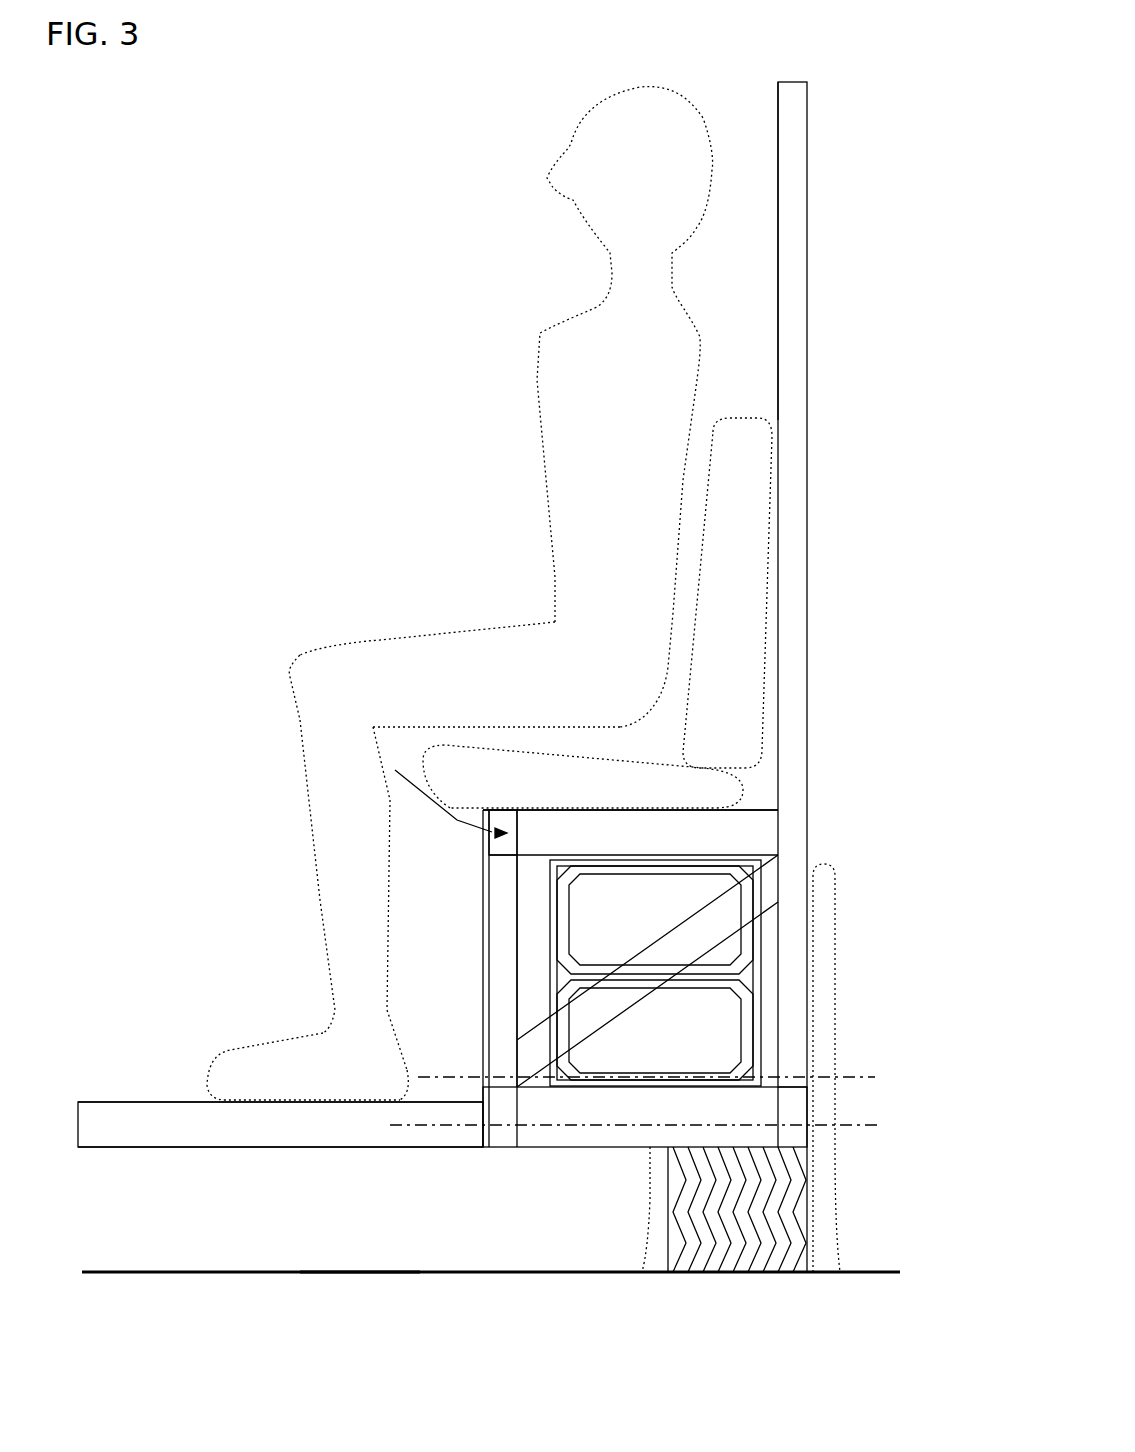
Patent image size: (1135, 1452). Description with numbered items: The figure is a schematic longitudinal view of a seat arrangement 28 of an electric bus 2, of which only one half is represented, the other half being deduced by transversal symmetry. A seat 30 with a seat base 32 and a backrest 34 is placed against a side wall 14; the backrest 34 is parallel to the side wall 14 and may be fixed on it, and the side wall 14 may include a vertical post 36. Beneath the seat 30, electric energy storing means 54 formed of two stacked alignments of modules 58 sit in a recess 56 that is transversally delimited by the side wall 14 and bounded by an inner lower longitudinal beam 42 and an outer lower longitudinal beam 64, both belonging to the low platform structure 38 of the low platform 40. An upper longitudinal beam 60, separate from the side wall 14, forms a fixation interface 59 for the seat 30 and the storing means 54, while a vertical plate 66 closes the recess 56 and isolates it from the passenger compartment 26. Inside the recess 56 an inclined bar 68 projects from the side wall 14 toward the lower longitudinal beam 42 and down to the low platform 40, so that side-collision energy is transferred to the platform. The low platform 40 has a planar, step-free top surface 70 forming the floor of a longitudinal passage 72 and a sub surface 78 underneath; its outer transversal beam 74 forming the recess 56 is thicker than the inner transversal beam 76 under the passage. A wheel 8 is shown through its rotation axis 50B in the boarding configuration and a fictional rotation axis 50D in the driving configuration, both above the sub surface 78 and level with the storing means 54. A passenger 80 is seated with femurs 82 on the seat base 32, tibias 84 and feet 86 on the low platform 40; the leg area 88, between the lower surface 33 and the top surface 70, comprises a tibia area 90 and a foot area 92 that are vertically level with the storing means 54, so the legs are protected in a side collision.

The electric bus 2 is at (75, 196).
The wheel 8 is at (740, 1300).
The side wall 14 is at (810, 277).
The passenger compartment 26 is at (221, 196).
The seat arrangement 28 is at (326, 196).
The seat 30 is at (428, 520).
The seat base 32 is at (518, 795).
The lower surface 33 is at (578, 815).
The backrest 34 is at (745, 625).
The vertical post 36 is at (790, 138).
The low platform structure 38 is at (223, 1220).
The low platform 40 is at (358, 1212).
The lower longitudinal beam 42 is at (505, 1140).
The rotation axis 50B is at (462, 1077).
The fictional rotation axis 50D is at (420, 1130).
The electric energy storing means 54 is at (767, 1000).
The recess 56 is at (770, 942).
The module 58 is at (626, 925).
The fixation interface 59 is at (385, 766).
The upper longitudinal beam 60 is at (487, 834).
The outer lower longitudinal beam 64 is at (803, 1098).
The vertical plate 66 is at (503, 892).
The inclined bar 68 is at (683, 970).
The top surface 70 is at (155, 1101).
The longitudinal passage 72 is at (126, 604).
The outer transversal beam 74 is at (592, 1133).
The inner transversal beam 76 is at (112, 1133).
The sub surface 78 is at (270, 1150).
The passenger 80 is at (643, 380).
The femur 82 is at (508, 698).
The tibia 84 is at (371, 845).
The foot 86 is at (318, 1088).
The leg area 88 is at (431, 970).
The tibia area 90 is at (375, 905).
The foot area 92 is at (378, 1088).